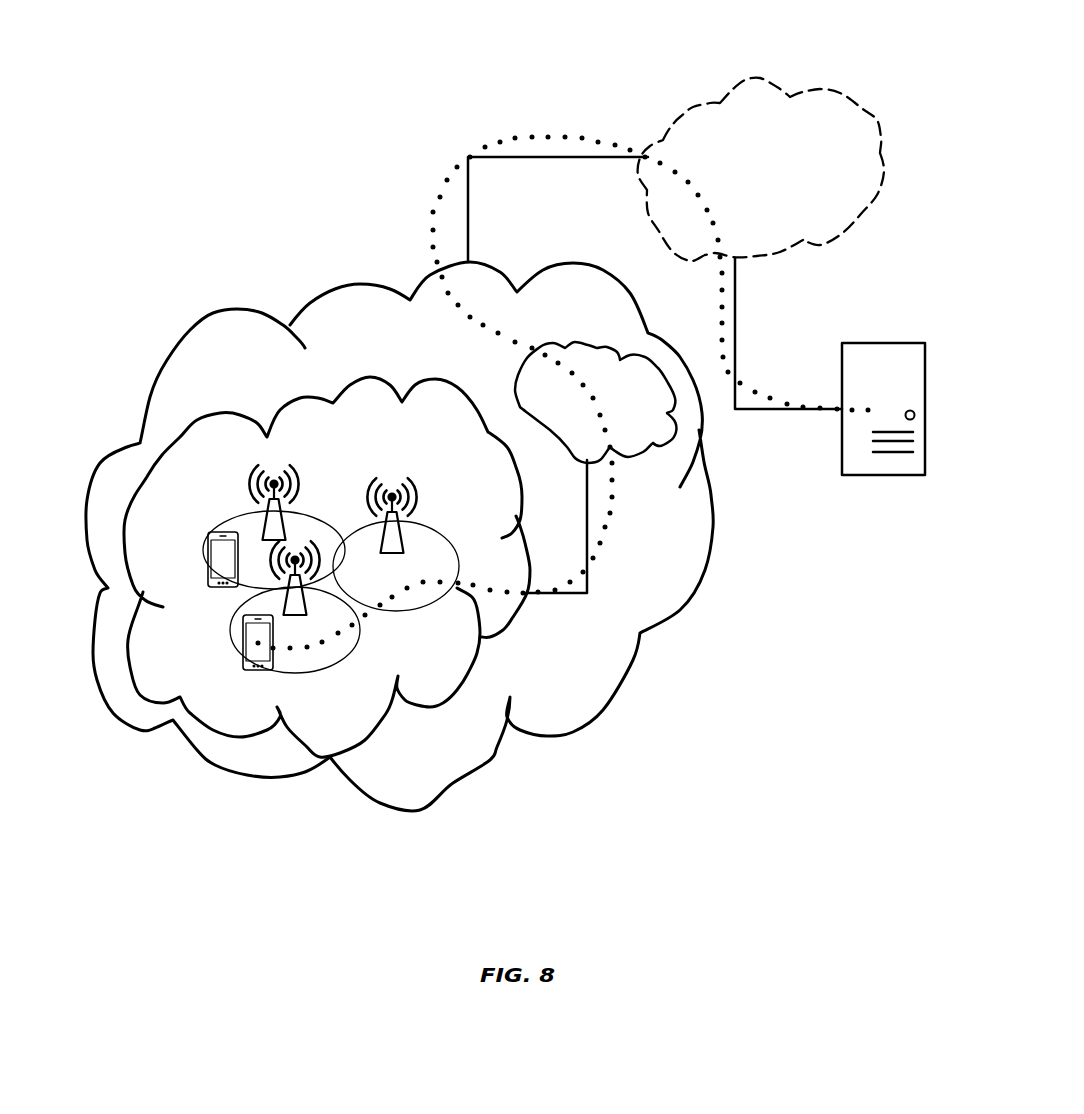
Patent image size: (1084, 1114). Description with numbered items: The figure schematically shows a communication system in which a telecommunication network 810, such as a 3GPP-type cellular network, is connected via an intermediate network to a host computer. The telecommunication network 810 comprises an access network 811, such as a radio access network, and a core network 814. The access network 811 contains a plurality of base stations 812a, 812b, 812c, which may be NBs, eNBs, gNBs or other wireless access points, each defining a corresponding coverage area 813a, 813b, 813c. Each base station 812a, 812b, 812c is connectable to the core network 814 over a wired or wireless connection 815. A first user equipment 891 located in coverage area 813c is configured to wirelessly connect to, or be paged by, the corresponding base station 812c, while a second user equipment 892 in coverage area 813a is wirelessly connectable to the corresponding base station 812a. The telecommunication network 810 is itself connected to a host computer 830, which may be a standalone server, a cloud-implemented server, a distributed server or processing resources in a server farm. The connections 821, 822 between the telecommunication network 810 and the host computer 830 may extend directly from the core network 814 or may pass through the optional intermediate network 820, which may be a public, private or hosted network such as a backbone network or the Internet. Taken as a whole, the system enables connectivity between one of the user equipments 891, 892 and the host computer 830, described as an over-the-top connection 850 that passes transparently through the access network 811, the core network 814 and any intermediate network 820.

The telecommunication network 810 is at (420, 334).
The access network 811 is at (374, 444).
The base station 812a is at (302, 614).
The base station 812b is at (418, 498).
The base station 812c is at (250, 483).
The coverage area 813a is at (362, 630).
The coverage area 813b is at (457, 560).
The coverage area 813c is at (227, 523).
The core network 814 is at (667, 417).
The wired or wireless connection 815 is at (590, 507).
The intermediate network 820 is at (782, 182).
The connection 821 is at (550, 157).
The connection 822 is at (793, 412).
The host computer 830 is at (883, 426).
The over-the-top (OTT) connection 850 is at (443, 182).
The first user equipment 891 is at (203, 573).
The second user equipment 892 is at (237, 667).